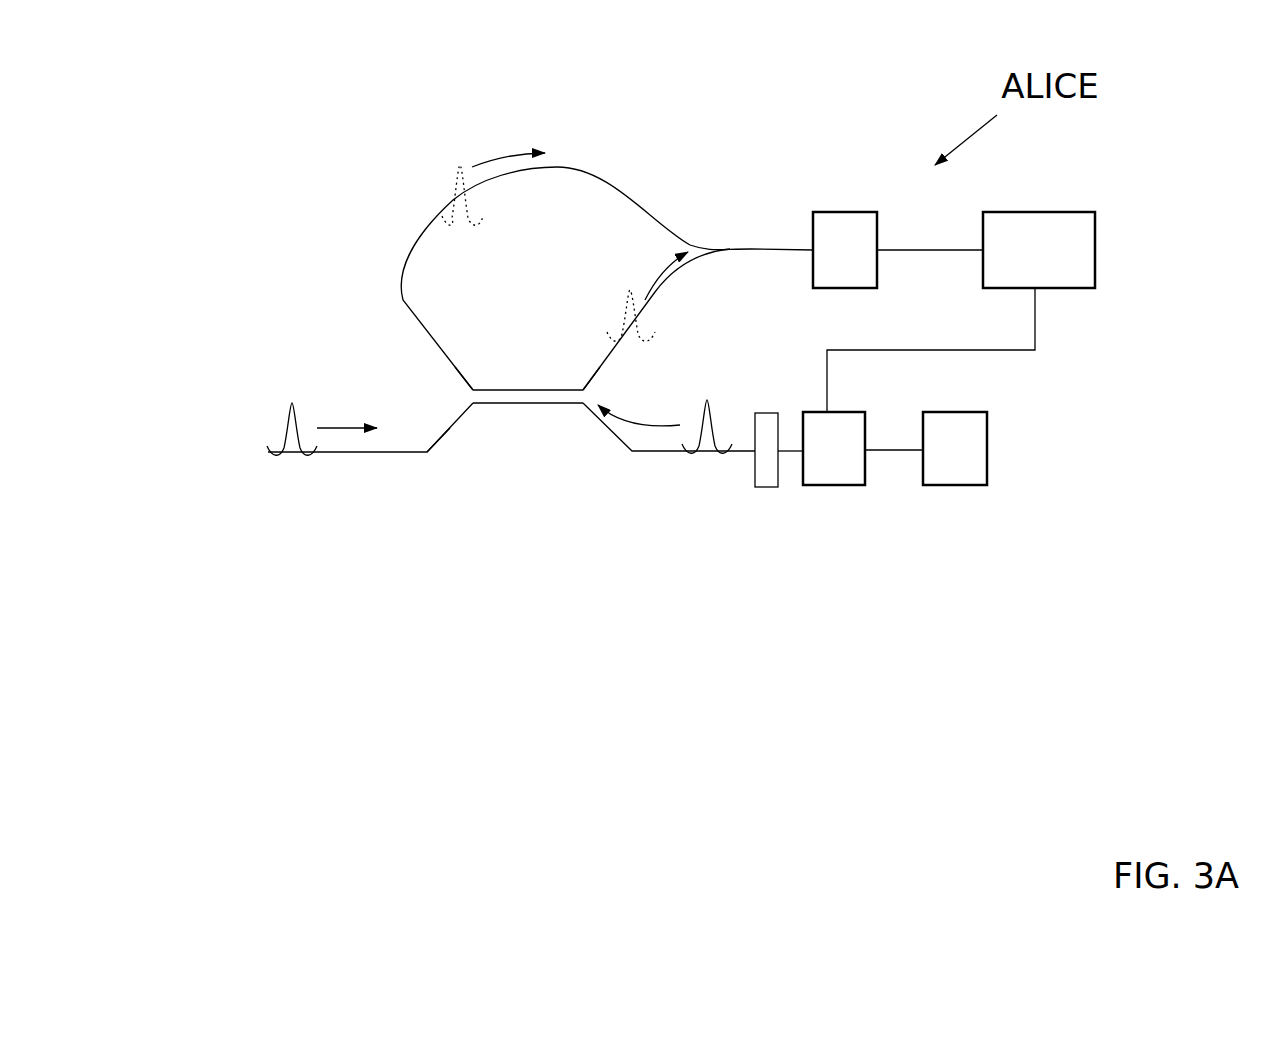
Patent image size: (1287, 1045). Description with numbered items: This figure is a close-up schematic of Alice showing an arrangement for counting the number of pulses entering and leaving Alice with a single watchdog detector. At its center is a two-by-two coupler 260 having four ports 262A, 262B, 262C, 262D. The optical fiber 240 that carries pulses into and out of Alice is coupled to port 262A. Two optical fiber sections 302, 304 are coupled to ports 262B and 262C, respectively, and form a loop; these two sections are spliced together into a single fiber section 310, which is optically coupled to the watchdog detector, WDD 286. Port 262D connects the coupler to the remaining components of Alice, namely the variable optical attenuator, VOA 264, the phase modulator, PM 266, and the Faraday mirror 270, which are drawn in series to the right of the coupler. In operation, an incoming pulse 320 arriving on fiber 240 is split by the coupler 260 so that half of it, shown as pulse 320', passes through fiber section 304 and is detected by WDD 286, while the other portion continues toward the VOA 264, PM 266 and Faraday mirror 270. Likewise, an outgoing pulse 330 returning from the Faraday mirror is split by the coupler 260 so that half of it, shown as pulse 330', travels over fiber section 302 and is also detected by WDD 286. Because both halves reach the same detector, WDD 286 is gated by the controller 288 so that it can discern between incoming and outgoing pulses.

The optical fiber 240 is at (340, 453).
The 2×2 coupler 260 is at (543, 442).
The port 262A is at (465, 440).
The port 262B is at (437, 365).
The port 262C is at (608, 377).
The port 262D is at (597, 432).
The VOA 264 is at (768, 475).
The PM 266 is at (815, 464).
The Faraday mirror 270 is at (936, 464).
The WDD 286 is at (826, 264).
The controller 288 is at (1019, 264).
The optical fiber section 302 is at (400, 280).
The optical fiber section 304 is at (657, 300).
The single fiber section 310 is at (753, 252).
The incoming pulse 320 is at (268, 423).
The pulse 320' is at (595, 310).
The outgoing pulse 330 is at (737, 421).
The pulse 330' is at (436, 177).